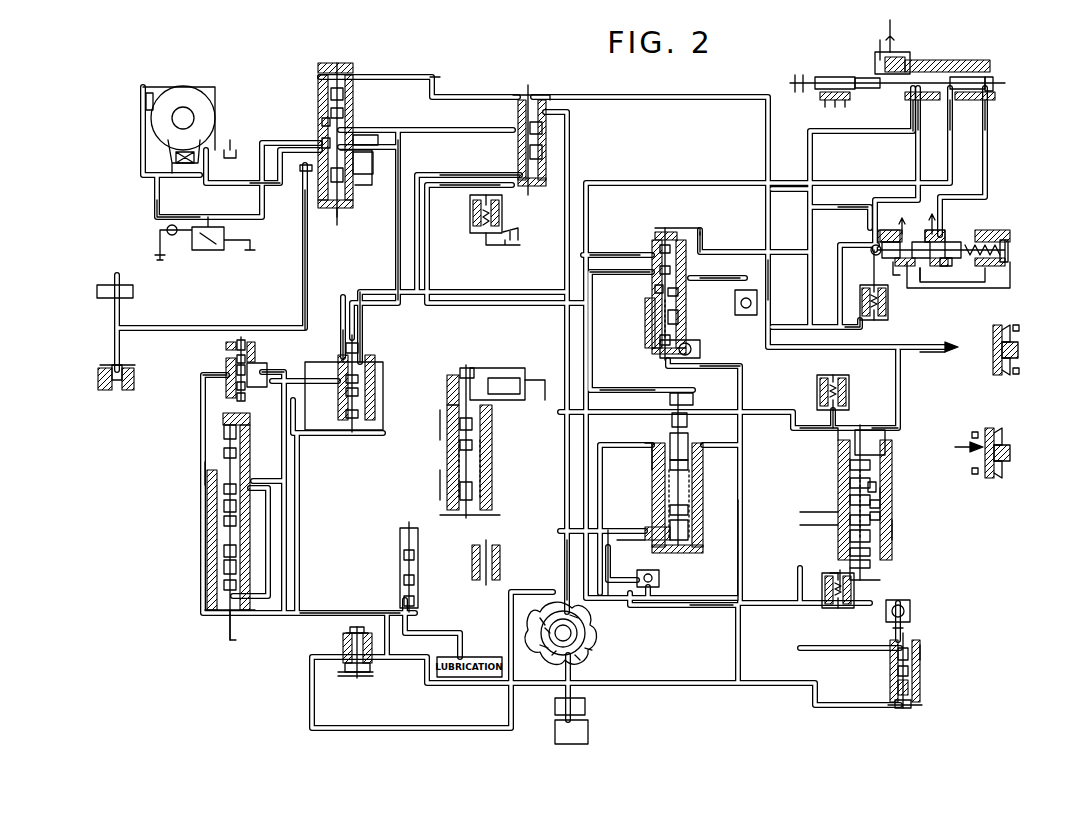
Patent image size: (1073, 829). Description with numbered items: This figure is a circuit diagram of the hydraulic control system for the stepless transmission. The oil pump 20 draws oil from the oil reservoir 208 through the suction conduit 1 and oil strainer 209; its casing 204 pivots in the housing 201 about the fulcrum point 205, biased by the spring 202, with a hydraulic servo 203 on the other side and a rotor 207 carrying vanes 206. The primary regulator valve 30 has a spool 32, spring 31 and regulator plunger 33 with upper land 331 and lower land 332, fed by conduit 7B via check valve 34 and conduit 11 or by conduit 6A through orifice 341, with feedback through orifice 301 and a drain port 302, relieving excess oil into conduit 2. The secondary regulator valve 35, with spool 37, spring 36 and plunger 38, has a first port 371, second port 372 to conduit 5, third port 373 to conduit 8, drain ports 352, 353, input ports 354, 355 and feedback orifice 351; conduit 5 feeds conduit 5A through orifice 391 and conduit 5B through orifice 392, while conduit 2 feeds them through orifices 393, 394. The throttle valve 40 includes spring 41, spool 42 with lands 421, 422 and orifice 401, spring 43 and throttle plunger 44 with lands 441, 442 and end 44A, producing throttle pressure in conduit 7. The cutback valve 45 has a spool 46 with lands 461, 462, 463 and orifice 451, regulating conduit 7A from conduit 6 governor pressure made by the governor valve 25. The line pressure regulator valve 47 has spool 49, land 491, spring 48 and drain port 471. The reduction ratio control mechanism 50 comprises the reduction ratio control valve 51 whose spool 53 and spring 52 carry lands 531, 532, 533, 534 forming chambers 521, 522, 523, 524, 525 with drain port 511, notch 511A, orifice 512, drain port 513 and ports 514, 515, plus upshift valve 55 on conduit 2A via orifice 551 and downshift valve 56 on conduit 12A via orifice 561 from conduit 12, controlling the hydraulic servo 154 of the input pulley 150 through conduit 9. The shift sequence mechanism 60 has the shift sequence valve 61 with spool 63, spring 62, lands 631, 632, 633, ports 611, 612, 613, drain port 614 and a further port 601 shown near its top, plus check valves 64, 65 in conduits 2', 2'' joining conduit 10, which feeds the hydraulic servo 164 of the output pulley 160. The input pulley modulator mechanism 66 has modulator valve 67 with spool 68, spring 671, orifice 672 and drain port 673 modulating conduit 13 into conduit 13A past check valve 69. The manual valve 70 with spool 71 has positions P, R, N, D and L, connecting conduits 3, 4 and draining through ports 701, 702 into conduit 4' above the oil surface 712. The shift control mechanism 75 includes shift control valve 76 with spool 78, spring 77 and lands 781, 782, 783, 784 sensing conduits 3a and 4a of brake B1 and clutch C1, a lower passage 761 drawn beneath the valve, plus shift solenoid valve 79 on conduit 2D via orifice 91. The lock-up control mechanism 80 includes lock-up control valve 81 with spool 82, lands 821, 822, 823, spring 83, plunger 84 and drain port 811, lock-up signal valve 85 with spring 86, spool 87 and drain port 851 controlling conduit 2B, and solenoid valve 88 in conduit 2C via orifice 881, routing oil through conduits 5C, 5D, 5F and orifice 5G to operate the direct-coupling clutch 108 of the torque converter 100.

The suction conduit 1 is at (952, 123).
The conduit 2 is at (613, 311).
The conduit 2' is at (641, 344).
The conduit 2'' is at (739, 368).
The conduit 2A is at (845, 420).
The conduit 2B is at (395, 195).
The conduit 2C is at (480, 178).
The conduit 2D is at (878, 272).
The conduit 3 is at (988, 123).
The pressure supply/drain conduit 3a is at (940, 244).
The conduit 4 is at (901, 115).
The conduit 4' is at (860, 36).
The pressure supply/drain conduit 4a is at (878, 237).
The conduit 5 is at (440, 440).
The conduit 5A is at (352, 158).
The lubricant oil supply conduit 5B is at (400, 600).
The conduit 5C is at (316, 132).
The conduit 5D is at (318, 158).
The conduit 5F is at (305, 190).
The orifice 5G is at (300, 172).
The conduit 6 is at (360, 340).
The conduit 6A is at (738, 512).
The conduit 7 is at (203, 378).
The conduit 7A is at (266, 372).
The output throttle pressure conduit 7B is at (365, 388).
The conduit 8 is at (560, 575).
The operating oil supply conduit 9 is at (712, 238).
The conduit 10 is at (370, 76).
The conduit 11 is at (640, 553).
The conduit 12 is at (650, 290).
The conduit 12A is at (848, 580).
The conduit 13 is at (610, 255).
The output conduit 13A is at (925, 655).
The oil pump 20 is at (595, 635).
The governor valve 25 is at (357, 685).
The primary regulator valve 30 is at (655, 495).
The biasing spring 31 is at (692, 492).
The spool 32 is at (695, 455).
The regulator plunger 33 is at (692, 535).
The check valve 34 is at (660, 578).
The secondary regulator valve 35 is at (498, 505).
The spring 36 is at (492, 470).
The spool 37 is at (492, 445).
The plunger 38 is at (492, 490).
The throttle valve 40 is at (210, 595).
The spring 41 is at (222, 432).
The spool 42 is at (224, 505).
The spring 43 is at (224, 522).
The throttle plunger 44 is at (224, 567).
The plunger end 44A is at (226, 628).
The cutback valve 45 is at (220, 350).
The spool 46 is at (252, 355).
The line pressure regulator valve 47 is at (335, 412).
The spring 48 is at (350, 415).
The spool 49 is at (348, 348).
The reduction ratio control mechanism 50 is at (820, 612).
The reduction ratio control valve 51 is at (838, 535).
The spring 52 is at (862, 570).
The spool 53 is at (880, 535).
The upshift solenoid valve 55 is at (852, 380).
The downshift solenoid valve 56 is at (855, 600).
The shift sequence mechanism 60 is at (666, 228).
The shift sequence valve 61 is at (655, 330).
The spring 62 is at (665, 340).
The spool 63 is at (688, 292).
The check valve 64 is at (742, 300).
The check valve 65 is at (698, 350).
The input pulley modulator mechanism 66 is at (900, 710).
The modulator valve 67 is at (928, 688).
The spool 68 is at (925, 663).
The check valve 69 is at (918, 610).
The manual valve 70 is at (960, 60).
The spool 71 is at (862, 88).
The shift control mechanism 75 is at (1012, 245).
The shift control valve 76 is at (1010, 262).
The spring 77 is at (990, 240).
The spool 78 is at (945, 262).
The shift solenoid valve 79 is at (860, 322).
The lock-up control mechanism 80 is at (450, 78).
The lock-up control valve 81 is at (340, 68).
The spool 82 is at (346, 178).
The spring 83 is at (350, 112).
The plunger 84 is at (350, 92).
The lock-up signal valve 85 is at (530, 92).
The spring 86 is at (528, 185).
The spool 87 is at (548, 150).
The electromagnetic solenoid valve 88 is at (483, 232).
The orifice 91 is at (862, 212).
The torque converter 100 is at (198, 108).
The direct-coupling clutch 108 is at (146, 110).
The input pulley 150 is at (1012, 443).
The hydraulic servo 154 is at (975, 432).
The output pulley 160 is at (1015, 332).
The hydraulic servo 164 is at (1020, 368).
The housing 201 is at (580, 660).
The spring 202 is at (592, 650).
The hydraulic servo 203 is at (552, 655).
The casing 204 is at (540, 645).
The fulcrum point 205 is at (578, 618).
The vanes 206 is at (540, 620).
The rotor 207 is at (545, 630).
The oil reservoir 208 is at (588, 732).
The oil strainer 209 is at (585, 706).
The orifice 301 is at (652, 390).
The drain port 302 is at (660, 465).
The upper land 331 is at (692, 512).
The lower land 332 is at (690, 555).
The orifice 341 is at (718, 620).
The orifice 351 is at (485, 368).
The drain port 352 is at (504, 385).
The drain port 353 is at (440, 480).
The input port 354 is at (500, 548).
The input port 355 is at (470, 368).
The first port 371 is at (492, 425).
The second port 372 is at (450, 400).
The third port 373 is at (540, 400).
The orifice 391 is at (415, 555).
The orifice 392 is at (415, 580).
The orifice 393 is at (415, 535).
The orifice 394 is at (418, 600).
The orifice 401 is at (215, 473).
The upper land 421 is at (224, 455).
The intermediate land 422 is at (224, 490).
The land 441 is at (224, 550).
The land 442 is at (224, 584).
The orifice 451 is at (230, 358).
The land 461 is at (236, 398).
The intermediate land 462 is at (228, 388).
The upper land 463 is at (240, 345).
The drain port 471 is at (340, 380).
The land 491 is at (343, 330).
The drain port 511 is at (850, 484).
The notch 511A is at (880, 492).
The orifice 512 is at (800, 525).
The drain port 513 is at (850, 520).
The port 514 is at (800, 512).
The port 515 is at (880, 500).
The oil chamber 521 is at (850, 465).
The oil chamber 522 is at (850, 500).
The oil chamber 523 is at (895, 530).
The lower oil chamber 524 is at (870, 565).
The upper oil chamber 525 is at (880, 430).
The upper land 531 is at (888, 440).
The intermediate land 532 is at (873, 487).
The intermediate land 533 is at (880, 515).
The lower land 534 is at (880, 552).
The orifice 551 is at (835, 435).
The orifice 561 is at (830, 573).
The port 601 is at (688, 225).
The port 611 is at (650, 250).
The port 612 is at (690, 270).
The port 613 is at (655, 290).
The drain port 614 is at (680, 318).
The upper land 631 is at (662, 240).
The intermediate land 632 is at (655, 320).
The land 633 is at (655, 345).
The spring 671 is at (892, 688).
The orifice 672 is at (893, 628).
The drain port 673 is at (925, 675).
The drain port 701 is at (995, 92).
The drain port 702 is at (905, 60).
The oil surface 712 is at (893, 35).
The passage 761 is at (935, 341).
The land 781 is at (903, 275).
The intermediate land 782 is at (925, 280).
The land 783 is at (958, 265).
The land 784 is at (1000, 285).
The drain port 811 is at (380, 140).
The lower land 821 is at (333, 210).
The intermediate land 822 is at (318, 140).
The upper land 823 is at (318, 120).
The drain port 851 is at (548, 128).
The orifice 881 is at (462, 185).
The brake B1 is at (930, 215).
The clutch C1 is at (895, 219).
The parking position P is at (803, 58).
The reverse position R is at (827, 58).
The neutral position N is at (844, 58).
The forward position D is at (859, 58).
The low position L is at (873, 58).